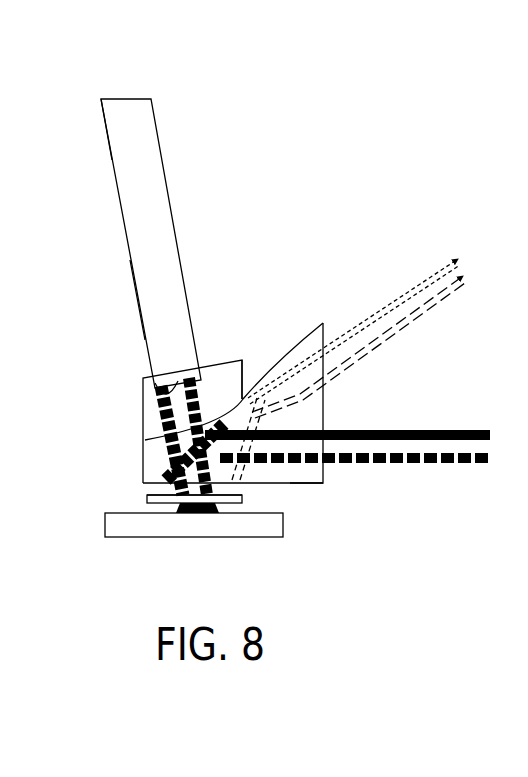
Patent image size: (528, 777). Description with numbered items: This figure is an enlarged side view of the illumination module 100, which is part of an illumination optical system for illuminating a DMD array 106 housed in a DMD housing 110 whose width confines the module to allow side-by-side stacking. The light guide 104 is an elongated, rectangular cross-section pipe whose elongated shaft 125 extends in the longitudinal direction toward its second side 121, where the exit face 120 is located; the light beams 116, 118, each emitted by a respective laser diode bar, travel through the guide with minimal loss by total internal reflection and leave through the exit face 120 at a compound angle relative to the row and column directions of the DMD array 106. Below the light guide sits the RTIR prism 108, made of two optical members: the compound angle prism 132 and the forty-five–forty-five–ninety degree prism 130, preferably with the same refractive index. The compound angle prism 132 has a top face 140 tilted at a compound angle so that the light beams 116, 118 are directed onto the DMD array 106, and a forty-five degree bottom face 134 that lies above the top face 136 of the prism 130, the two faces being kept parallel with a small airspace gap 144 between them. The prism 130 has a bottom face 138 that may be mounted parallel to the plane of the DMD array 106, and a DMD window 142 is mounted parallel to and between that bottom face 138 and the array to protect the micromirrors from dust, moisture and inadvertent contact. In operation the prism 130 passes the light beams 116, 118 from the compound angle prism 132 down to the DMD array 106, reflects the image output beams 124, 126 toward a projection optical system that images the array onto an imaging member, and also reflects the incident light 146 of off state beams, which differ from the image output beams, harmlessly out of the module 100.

The illumination module 100 is at (300, 111).
The light guide 104 is at (150, 137).
The DMD array 106 is at (120, 508).
The RTIR prism 108 is at (291, 270).
The DMD housing 110 is at (113, 529).
The light beam 116 is at (158, 441).
The light beam 118 is at (193, 375).
The exit face 120 is at (162, 393).
The second side 121 is at (140, 300).
The image output beam 124 is at (446, 465).
The elongated shaft 125 is at (118, 155).
The image output beam 126 is at (456, 429).
The 45-45-90 degree prism 130 is at (324, 413).
The compound angle prism 132 is at (143, 415).
The bottom face 134 is at (168, 481).
The top face 136 is at (304, 342).
The bottom face 138 is at (332, 483).
The top face 140 is at (245, 362).
The DMD window 142 is at (243, 499).
The airspace gap 144 is at (262, 380).
The incident light of off state beams 146 is at (444, 264).